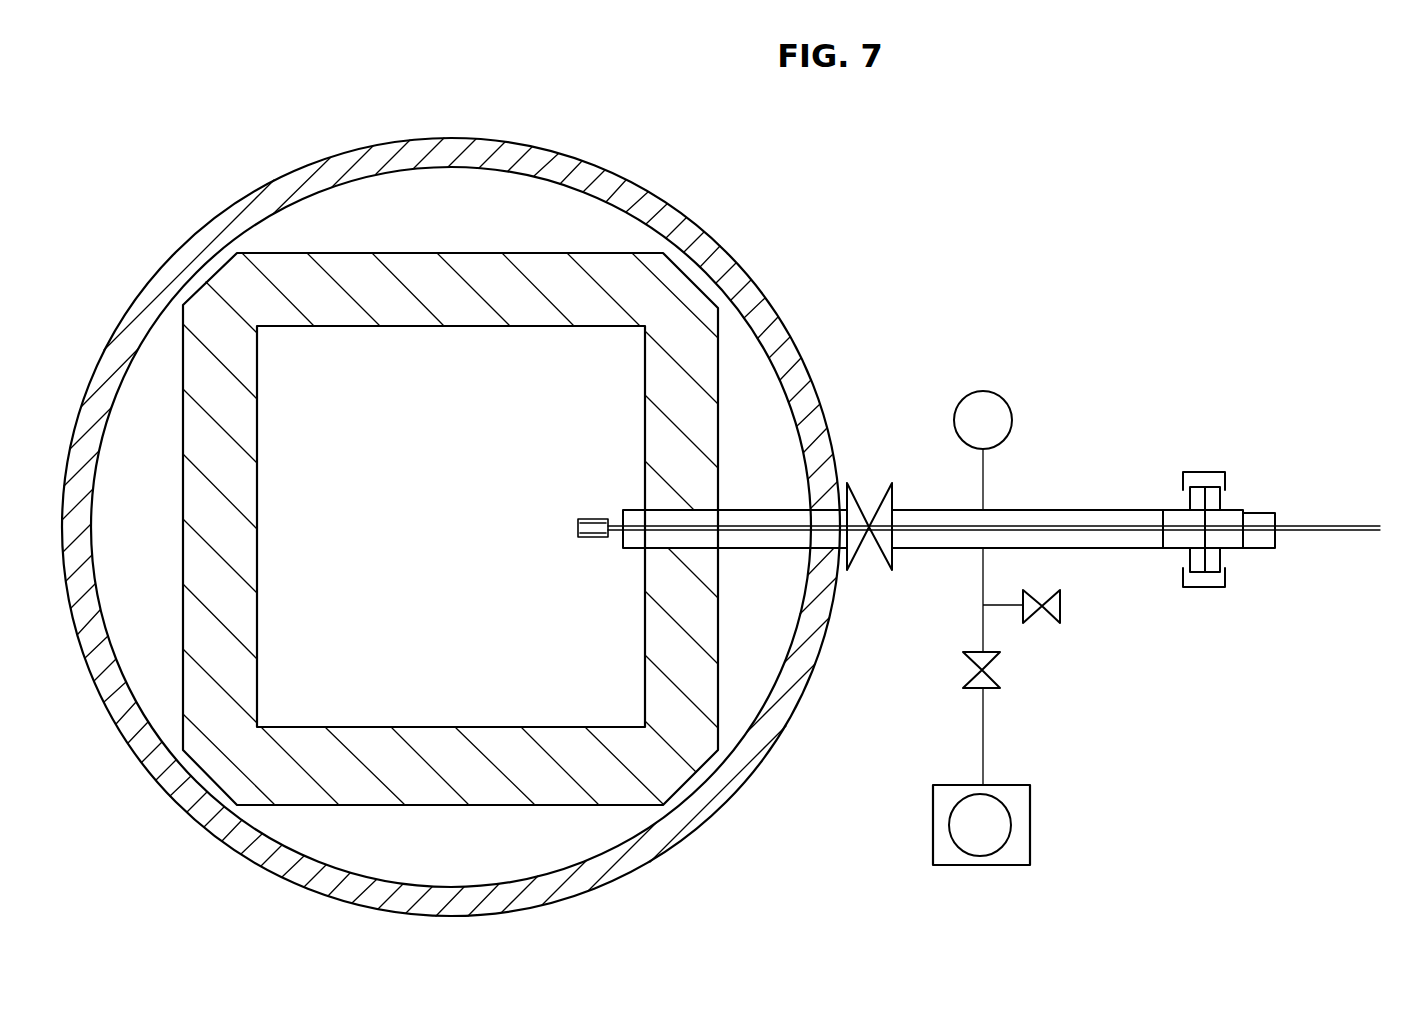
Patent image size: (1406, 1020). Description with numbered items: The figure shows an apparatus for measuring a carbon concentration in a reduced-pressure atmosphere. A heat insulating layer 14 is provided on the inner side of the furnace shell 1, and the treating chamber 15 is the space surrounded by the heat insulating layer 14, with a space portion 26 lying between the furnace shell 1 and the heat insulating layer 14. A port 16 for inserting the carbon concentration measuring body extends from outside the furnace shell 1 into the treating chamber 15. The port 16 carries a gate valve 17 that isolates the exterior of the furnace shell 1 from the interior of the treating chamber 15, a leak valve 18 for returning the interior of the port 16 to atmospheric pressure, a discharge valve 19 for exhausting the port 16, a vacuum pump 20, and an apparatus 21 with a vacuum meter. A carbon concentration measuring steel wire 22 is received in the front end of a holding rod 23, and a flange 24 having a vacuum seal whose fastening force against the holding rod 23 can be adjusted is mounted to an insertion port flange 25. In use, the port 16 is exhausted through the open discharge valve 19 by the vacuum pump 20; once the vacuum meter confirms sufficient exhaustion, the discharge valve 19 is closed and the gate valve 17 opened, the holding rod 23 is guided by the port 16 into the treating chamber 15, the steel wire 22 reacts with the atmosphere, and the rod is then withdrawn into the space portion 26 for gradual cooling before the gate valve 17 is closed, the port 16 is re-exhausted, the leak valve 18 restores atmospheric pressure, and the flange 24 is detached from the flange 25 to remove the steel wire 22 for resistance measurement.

The furnace shell 1 is at (680, 223).
The heat insulating layer 14 is at (580, 265).
The treating chamber 15 is at (513, 353).
The port 16 is at (1127, 512).
The gate valve 17 is at (878, 483).
The leak valve 18 is at (1050, 623).
The discharge valve 19 is at (962, 678).
The vacuum pump 20 is at (1030, 815).
The apparatus with a vacuum meter 21 is at (1010, 397).
The carbon concentration measuring steel wire 22 is at (583, 518).
The holding rod 23 is at (1350, 535).
The flange 24 is at (1258, 552).
The insertion port flange 25 is at (1177, 558).
The space portion 26 is at (757, 548).